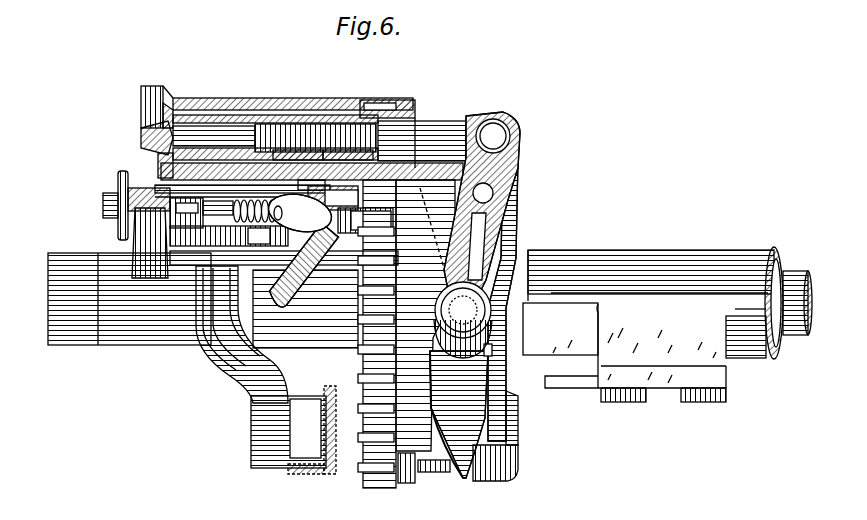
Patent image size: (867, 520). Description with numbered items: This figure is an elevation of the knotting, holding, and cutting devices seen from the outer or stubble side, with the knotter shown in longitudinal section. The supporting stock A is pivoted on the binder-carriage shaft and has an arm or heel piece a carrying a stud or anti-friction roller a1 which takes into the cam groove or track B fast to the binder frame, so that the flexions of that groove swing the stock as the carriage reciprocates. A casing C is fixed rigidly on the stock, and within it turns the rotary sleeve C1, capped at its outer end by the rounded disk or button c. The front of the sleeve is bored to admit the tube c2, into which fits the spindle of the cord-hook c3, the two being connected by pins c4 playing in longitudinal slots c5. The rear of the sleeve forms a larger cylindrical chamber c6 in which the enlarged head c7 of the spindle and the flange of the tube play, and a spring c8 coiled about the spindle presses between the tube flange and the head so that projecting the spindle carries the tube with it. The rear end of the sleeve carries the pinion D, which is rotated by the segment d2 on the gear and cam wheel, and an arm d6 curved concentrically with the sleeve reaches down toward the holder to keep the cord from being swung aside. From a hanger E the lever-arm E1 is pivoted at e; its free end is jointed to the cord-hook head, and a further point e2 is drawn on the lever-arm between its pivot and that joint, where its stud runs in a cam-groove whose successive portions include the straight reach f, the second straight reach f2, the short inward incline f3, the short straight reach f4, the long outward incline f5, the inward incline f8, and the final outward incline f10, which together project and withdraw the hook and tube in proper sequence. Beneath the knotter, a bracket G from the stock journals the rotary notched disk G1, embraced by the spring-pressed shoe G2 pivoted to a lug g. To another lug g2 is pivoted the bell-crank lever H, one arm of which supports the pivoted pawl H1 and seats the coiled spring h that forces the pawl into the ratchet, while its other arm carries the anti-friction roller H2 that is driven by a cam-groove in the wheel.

The supporting stock A is at (430, 324).
The arm or heel piece a is at (242, 334).
The stud or anti-friction roller a1 is at (288, 432).
The cam groove or track B is at (300, 462).
The lug g is at (150, 250).
The spring-pressed shoe G2 is at (170, 180).
The rotary notched disk G1 is at (186, 213).
The lug g2 is at (239, 214).
The bracket G is at (284, 245).
The coiled spring h is at (259, 237).
The pivoted pawl H1 is at (328, 195).
The anti-friction roller H2 is at (365, 220).
The bell-crank lever H is at (302, 248).
The casing C is at (200, 92).
The rotary sleeve C1 is at (232, 110).
The pinion D is at (392, 100).
The disk or button c is at (133, 103).
The cord-hook c3 is at (140, 118).
The tube c2 is at (135, 132).
The arm d6 is at (150, 152).
The longitudinal slots c5 is at (228, 118).
The pins c4 is at (270, 120).
The spring c8 is at (298, 142).
The cylindrical chamber c6 is at (318, 142).
The enlarged head c7 is at (422, 141).
The hanger E is at (425, 315).
The segment d2 is at (362, 480).
The straight reach f is at (512, 245).
The second straight reach f2 is at (444, 414).
The short inward incline f3 is at (484, 344).
The short straight reach f4 is at (462, 470).
The long outward incline f5 is at (430, 466).
The inward incline f8 is at (508, 433).
The lever-arm E1 is at (504, 214).
The outward incline f10 is at (503, 140).
The pin hole e2 is at (486, 187).
The pivot e is at (463, 320).